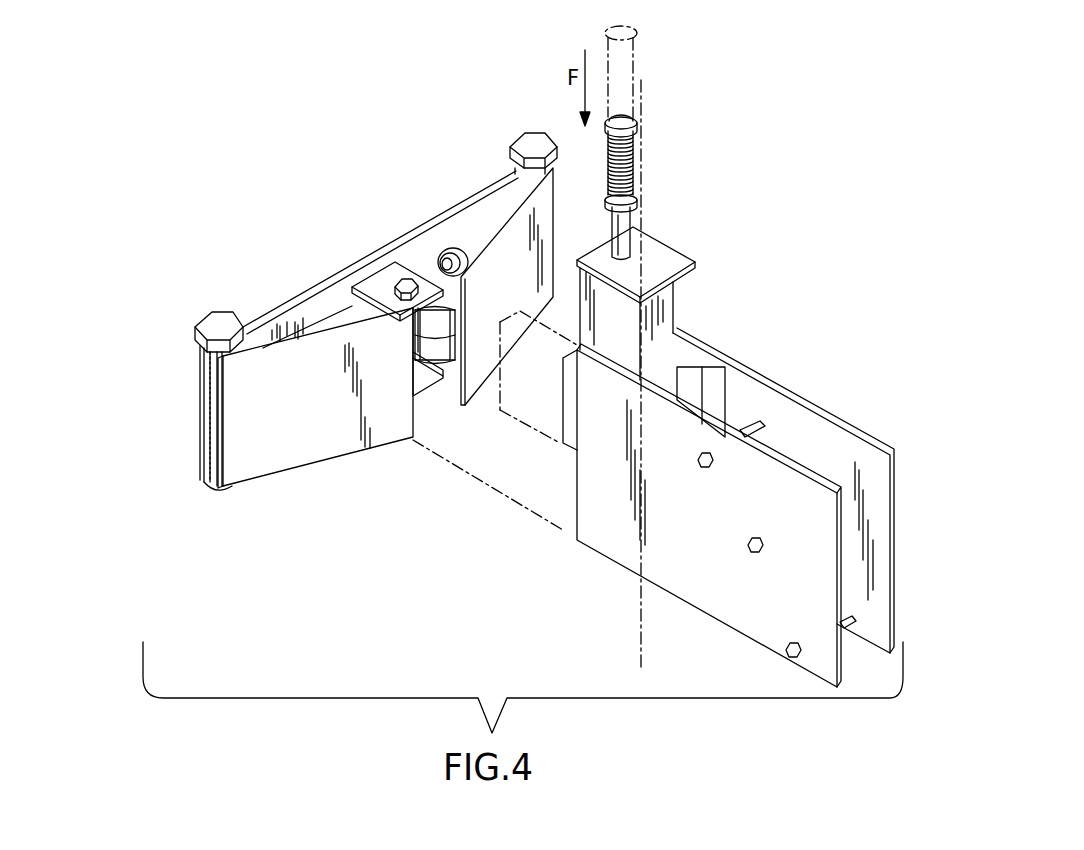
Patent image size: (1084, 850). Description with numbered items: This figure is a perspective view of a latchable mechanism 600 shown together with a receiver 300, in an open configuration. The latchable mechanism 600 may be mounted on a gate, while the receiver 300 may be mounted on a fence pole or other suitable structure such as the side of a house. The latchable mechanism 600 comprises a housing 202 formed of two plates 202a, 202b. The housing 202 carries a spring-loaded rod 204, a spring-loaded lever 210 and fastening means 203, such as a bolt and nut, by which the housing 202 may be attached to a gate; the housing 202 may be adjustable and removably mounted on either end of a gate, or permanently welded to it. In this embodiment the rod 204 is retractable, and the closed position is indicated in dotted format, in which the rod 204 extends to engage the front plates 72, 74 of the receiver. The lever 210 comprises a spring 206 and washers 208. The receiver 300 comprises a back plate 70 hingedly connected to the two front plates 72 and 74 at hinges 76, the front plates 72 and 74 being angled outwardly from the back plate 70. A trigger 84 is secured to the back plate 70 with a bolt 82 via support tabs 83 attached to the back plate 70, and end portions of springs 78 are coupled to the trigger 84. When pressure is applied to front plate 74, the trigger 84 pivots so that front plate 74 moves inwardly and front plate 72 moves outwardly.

The back plate 70 is at (300, 318).
The front plate 72 is at (300, 432).
The front plate 74 is at (524, 295).
The hinge 76 is at (530, 143).
The spring 78 is at (430, 335).
The bolt 82 is at (372, 283).
The support tab 83 is at (358, 290).
The trigger 84 is at (410, 280).
The housing 202 is at (672, 615).
The plate 202a is at (680, 522).
The plate 202b is at (833, 424).
The fastening means 203 is at (745, 422).
The spring-loaded rod 204 is at (570, 437).
The spring 206 is at (633, 168).
The washer 208 is at (641, 128).
The spring-loaded lever 210 is at (622, 220).
The receiver 300 is at (176, 386).
The latchable mechanism 600 is at (756, 277).